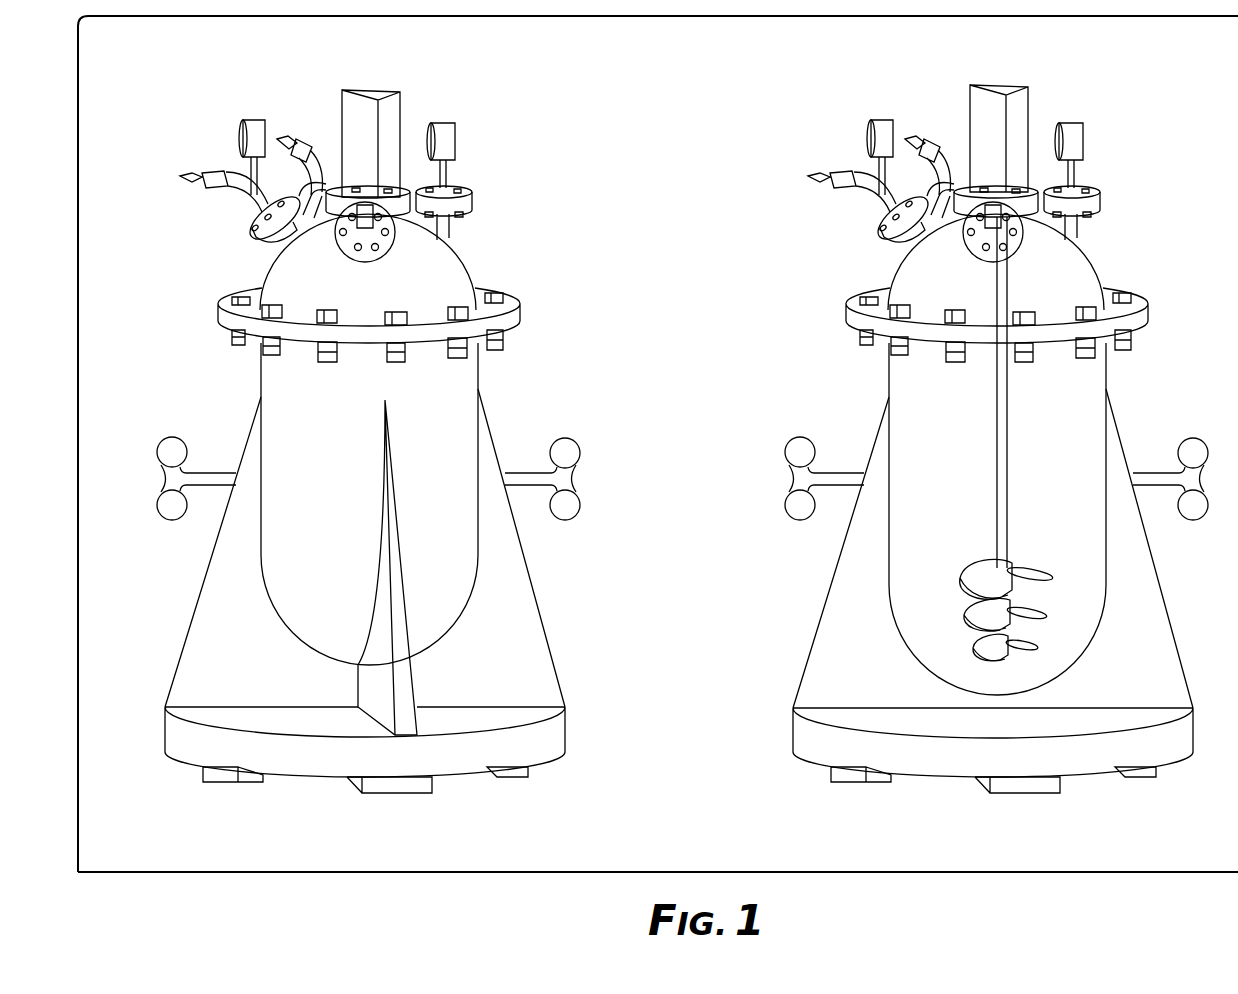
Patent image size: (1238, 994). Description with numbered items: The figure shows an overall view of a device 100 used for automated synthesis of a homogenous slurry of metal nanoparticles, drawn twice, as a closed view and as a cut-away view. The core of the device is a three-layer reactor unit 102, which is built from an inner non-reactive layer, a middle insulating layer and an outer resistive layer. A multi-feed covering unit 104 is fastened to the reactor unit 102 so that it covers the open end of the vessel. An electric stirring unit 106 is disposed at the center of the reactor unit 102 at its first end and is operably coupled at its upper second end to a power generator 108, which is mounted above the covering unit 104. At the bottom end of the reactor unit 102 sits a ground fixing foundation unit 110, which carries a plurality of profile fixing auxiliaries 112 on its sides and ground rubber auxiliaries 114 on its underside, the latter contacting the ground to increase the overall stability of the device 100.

The device 100 is at (200, 80).
The three-layer reactor unit 102 is at (293, 640).
The multi-feed covering unit 104 is at (267, 271).
The electric stirring unit 106 is at (1003, 527).
The power generator 108 is at (375, 90).
The ground fixing foundation unit 110 is at (212, 680).
The profile fixing auxiliaries 112 is at (167, 440).
The ground rubber auxiliaries 114 is at (227, 773).